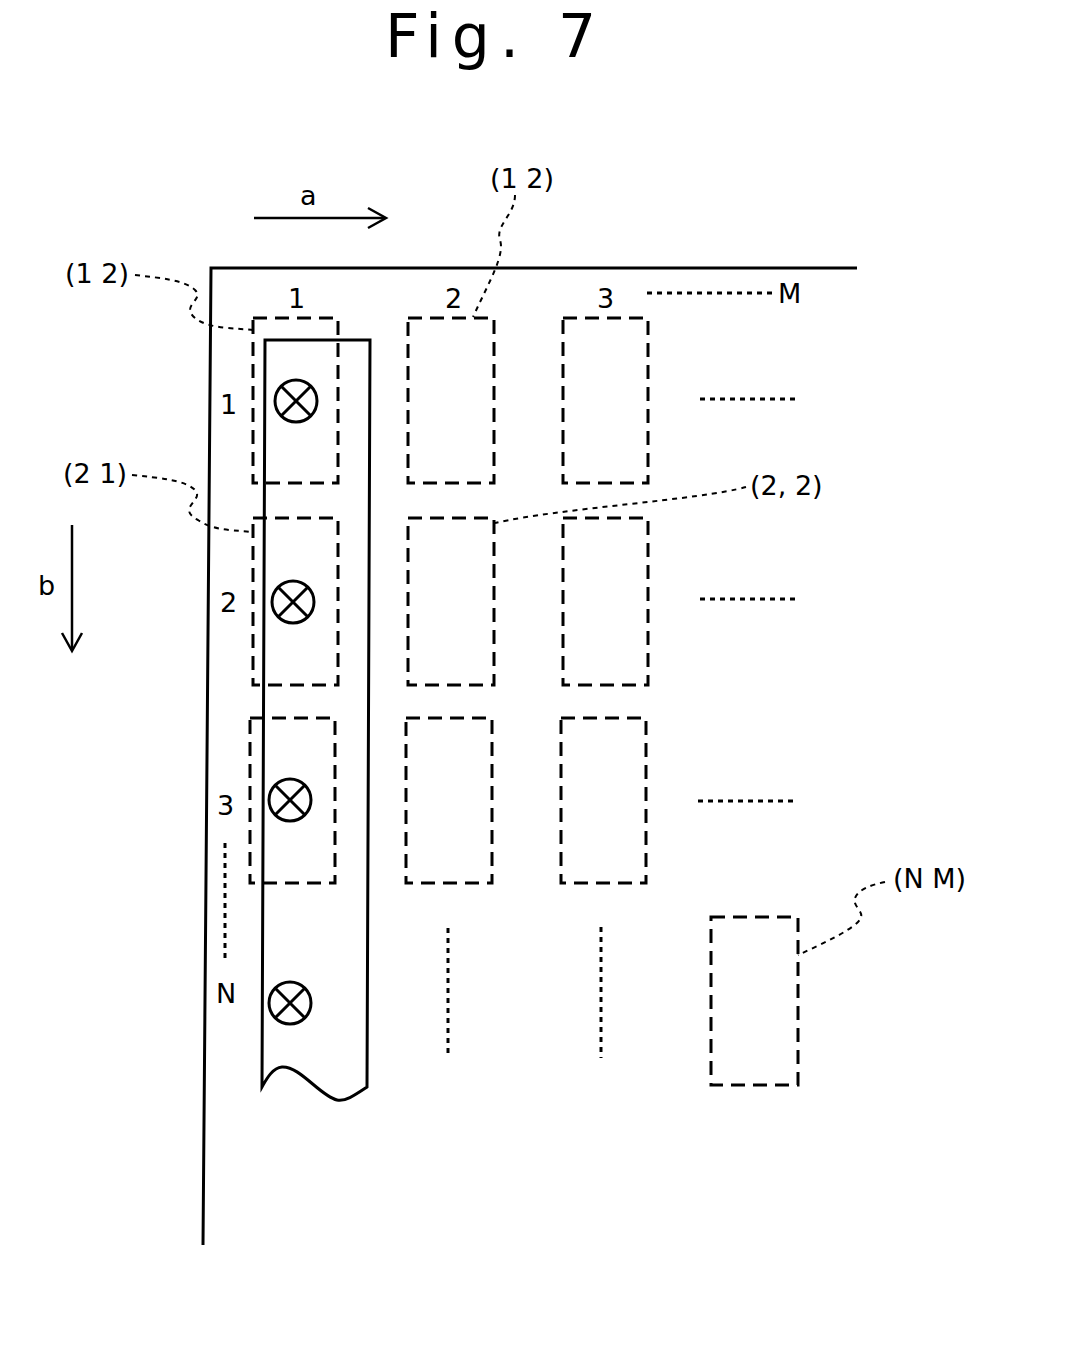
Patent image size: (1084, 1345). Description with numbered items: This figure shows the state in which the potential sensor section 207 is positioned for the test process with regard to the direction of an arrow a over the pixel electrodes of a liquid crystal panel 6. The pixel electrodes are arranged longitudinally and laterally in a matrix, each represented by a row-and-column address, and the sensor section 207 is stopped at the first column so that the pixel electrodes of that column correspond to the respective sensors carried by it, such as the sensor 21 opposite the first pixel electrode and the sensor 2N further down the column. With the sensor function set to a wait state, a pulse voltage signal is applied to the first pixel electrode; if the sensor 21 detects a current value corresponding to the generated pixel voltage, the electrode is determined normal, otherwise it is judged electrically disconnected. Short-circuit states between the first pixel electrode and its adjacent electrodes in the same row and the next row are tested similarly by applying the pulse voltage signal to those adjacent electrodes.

The liquid crystal panel 6 is at (750, 268).
The sensor section 207 is at (367, 1055).
The sensor 21 is at (275, 392).
The sensor 2N is at (273, 795).